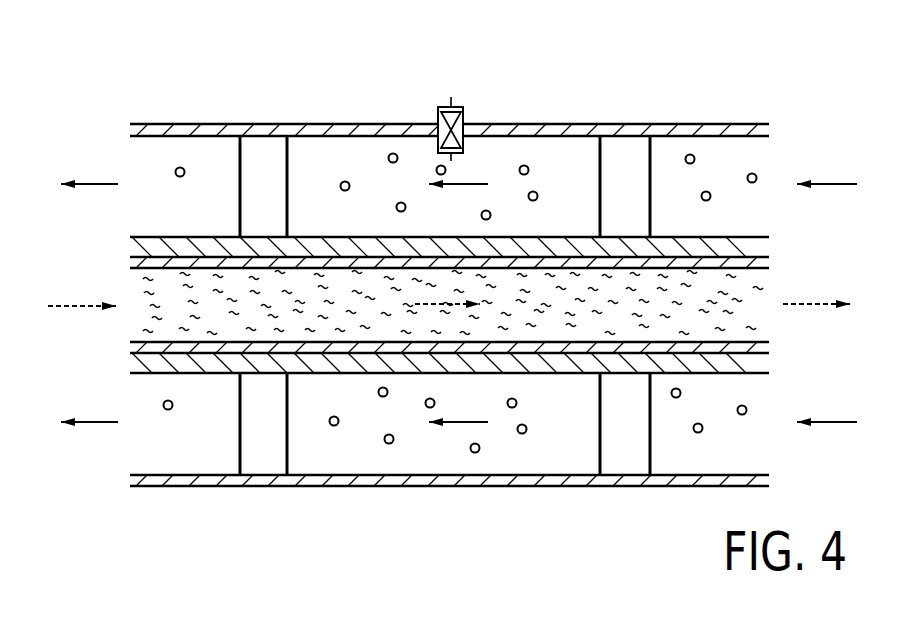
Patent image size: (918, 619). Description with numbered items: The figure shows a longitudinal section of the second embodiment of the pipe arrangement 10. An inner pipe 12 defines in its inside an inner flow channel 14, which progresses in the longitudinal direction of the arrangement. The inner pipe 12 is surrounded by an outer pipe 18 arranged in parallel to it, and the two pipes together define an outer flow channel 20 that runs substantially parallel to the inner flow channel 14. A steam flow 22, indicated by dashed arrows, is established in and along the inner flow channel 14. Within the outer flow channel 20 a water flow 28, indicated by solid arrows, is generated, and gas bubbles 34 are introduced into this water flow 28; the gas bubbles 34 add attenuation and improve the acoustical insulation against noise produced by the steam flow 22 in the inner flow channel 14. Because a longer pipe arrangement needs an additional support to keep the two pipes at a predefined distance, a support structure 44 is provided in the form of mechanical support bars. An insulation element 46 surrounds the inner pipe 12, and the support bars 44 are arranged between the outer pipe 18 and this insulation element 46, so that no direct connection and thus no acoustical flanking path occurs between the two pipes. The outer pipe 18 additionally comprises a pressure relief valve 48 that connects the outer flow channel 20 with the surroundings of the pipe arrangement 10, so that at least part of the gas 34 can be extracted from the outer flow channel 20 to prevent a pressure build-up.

The pipe arrangement 10 is at (452, 305).
The inner pipe 12 is at (556, 256).
The inner flow channel 14 is at (449, 398).
The outer pipe 18 is at (405, 489).
The outer flow channel 20 is at (459, 282).
The steam flow 22 is at (826, 303).
The water flow 28 is at (818, 183).
The gas bubbles 34 is at (691, 154).
The support structure 44 is at (623, 183).
The insulation element 46 is at (231, 243).
The pressure relief valve 48 is at (462, 107).